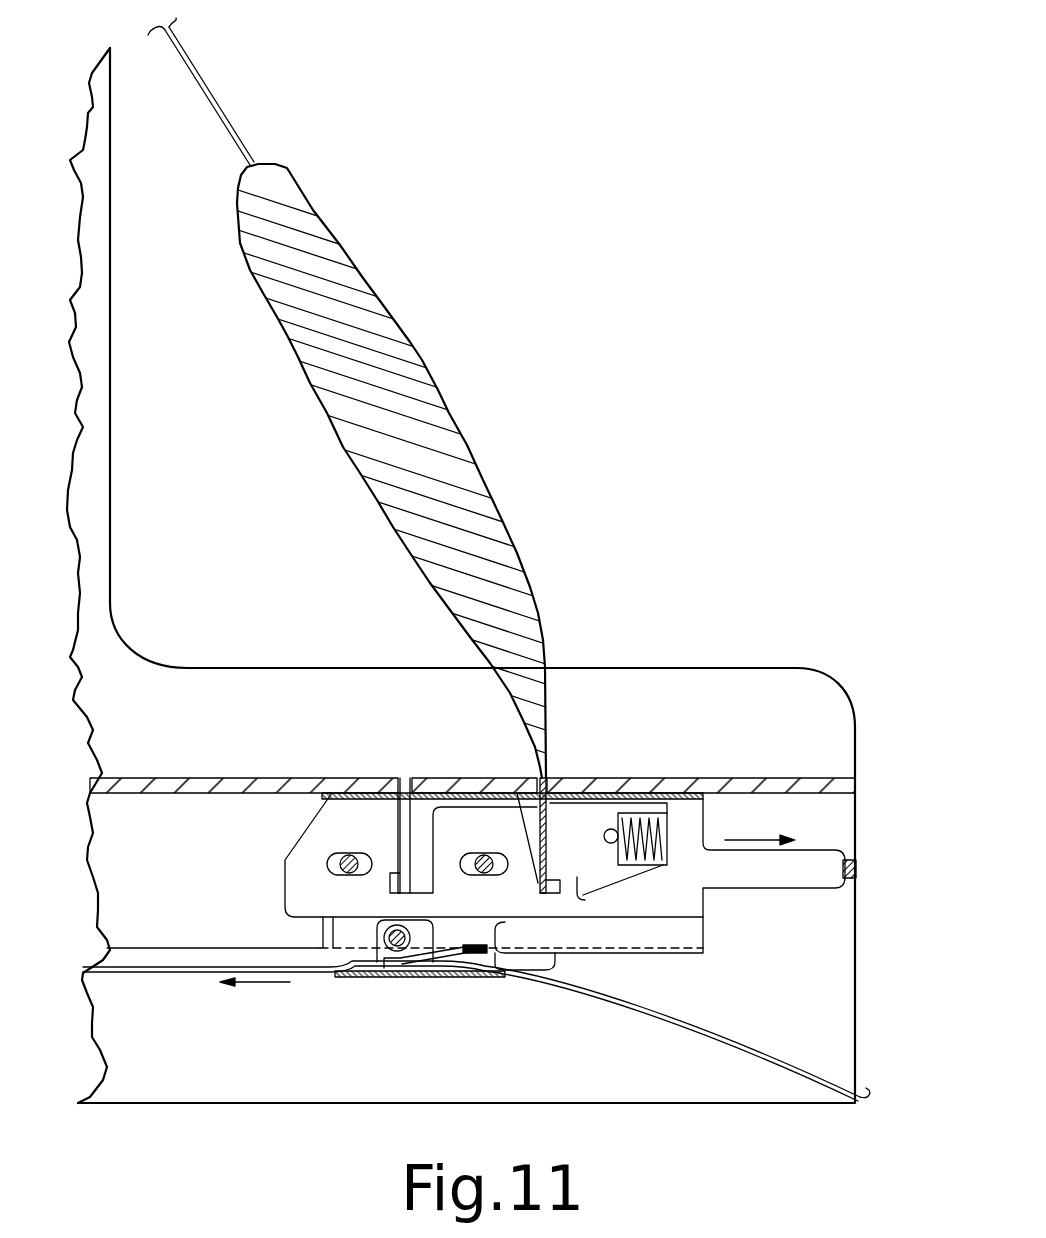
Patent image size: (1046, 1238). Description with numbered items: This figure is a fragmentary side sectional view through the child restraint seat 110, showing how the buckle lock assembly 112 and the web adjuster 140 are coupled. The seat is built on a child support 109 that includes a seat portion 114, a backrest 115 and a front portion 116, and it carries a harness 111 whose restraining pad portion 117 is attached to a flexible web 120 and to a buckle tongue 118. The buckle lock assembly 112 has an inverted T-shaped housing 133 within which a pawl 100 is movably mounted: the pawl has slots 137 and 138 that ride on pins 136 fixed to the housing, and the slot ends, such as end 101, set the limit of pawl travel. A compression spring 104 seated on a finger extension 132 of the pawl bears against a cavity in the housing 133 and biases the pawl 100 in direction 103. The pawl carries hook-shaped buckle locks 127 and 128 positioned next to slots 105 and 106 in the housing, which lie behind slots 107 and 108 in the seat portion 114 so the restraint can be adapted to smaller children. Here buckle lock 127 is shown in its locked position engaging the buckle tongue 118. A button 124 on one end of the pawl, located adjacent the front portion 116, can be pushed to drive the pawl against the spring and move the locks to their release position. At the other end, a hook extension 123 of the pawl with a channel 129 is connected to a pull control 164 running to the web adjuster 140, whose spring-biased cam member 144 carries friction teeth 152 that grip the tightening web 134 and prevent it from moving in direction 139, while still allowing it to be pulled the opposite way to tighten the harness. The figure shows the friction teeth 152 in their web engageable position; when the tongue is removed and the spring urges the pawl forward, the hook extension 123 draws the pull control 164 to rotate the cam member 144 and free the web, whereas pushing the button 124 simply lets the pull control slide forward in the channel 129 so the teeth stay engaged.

The pawl 100 is at (578, 870).
The slot end 101 is at (363, 875).
The direction of pawl bias 103 is at (760, 829).
The compression spring 104 is at (663, 842).
The slot in housing 105 is at (397, 812).
The slot in housing 106 is at (533, 837).
The slot in seat 107 is at (407, 770).
The slot in seat 108 is at (537, 772).
The child support 109 is at (845, 690).
The child restraint seat 110 is at (481, 575).
The harness 111 is at (375, 455).
The buckle lock assembly 112 is at (452, 962).
The seat portion 114 is at (472, 791).
The backrest 115 is at (110, 433).
The front portion 116 is at (857, 1010).
The restraining pad portion 117 is at (440, 398).
The buckle tongue 118 is at (548, 807).
The flexible web 120 is at (197, 72).
The hook extension 123 is at (507, 963).
The button 124 is at (860, 868).
The buckle lock 127 is at (403, 873).
The buckle lock 128 is at (578, 885).
The channel of hook extension 129 is at (512, 943).
The finger extension 132 is at (618, 832).
The housing 133 is at (710, 933).
The tightening web 134 is at (183, 975).
The pin 136 is at (342, 880).
The slot 137 is at (353, 855).
The slot 138 is at (483, 857).
The direction of web movement 139 is at (255, 995).
The web adjuster 140 is at (350, 985).
The cam member 144 is at (373, 967).
The friction teeth 152 is at (427, 973).
The pull control 164 is at (450, 973).